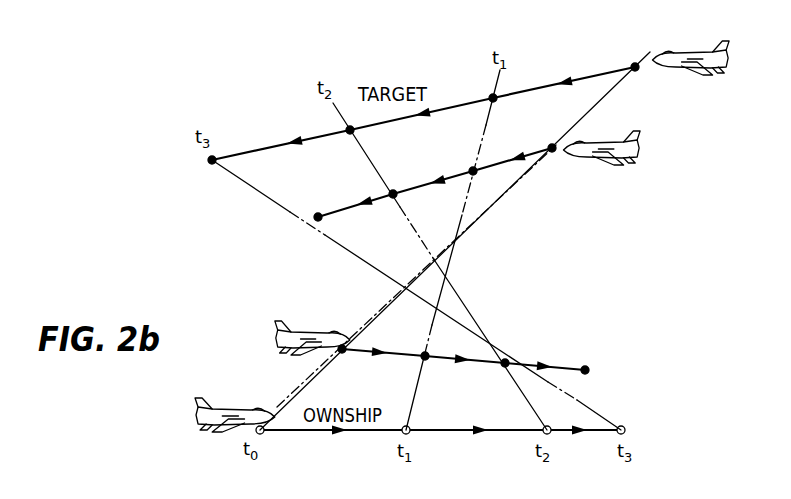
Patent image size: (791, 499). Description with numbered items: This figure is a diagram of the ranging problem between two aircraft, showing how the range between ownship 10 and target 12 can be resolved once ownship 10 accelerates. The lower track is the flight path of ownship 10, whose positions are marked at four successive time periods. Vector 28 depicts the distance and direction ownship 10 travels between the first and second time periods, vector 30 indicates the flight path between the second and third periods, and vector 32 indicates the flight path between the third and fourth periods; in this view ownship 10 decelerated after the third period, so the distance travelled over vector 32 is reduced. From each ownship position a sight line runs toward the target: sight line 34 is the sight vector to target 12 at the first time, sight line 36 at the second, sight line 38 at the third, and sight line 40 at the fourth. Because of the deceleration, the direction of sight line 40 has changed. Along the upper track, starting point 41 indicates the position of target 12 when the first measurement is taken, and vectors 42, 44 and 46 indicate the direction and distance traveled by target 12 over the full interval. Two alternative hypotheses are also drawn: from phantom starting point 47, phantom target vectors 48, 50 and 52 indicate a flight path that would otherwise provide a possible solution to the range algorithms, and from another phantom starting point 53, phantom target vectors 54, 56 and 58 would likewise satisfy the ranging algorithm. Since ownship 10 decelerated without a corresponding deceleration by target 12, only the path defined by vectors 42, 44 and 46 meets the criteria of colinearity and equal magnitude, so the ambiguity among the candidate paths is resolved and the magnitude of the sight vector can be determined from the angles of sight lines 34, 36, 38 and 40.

The ownship 10 is at (192, 397).
The target 12 is at (723, 76).
The vector 28 is at (380, 436).
The vector 30 is at (512, 428).
The vector 32 is at (595, 428).
The sight line 34 is at (375, 317).
The sight line 36 is at (432, 335).
The sight line 38 is at (478, 323).
The sight line 40 is at (515, 354).
The starting point 41 is at (647, 80).
The vector 42 is at (612, 70).
The vector 44 is at (466, 103).
The vector 46 is at (323, 130).
The phantom starting point 47 is at (550, 153).
The phantom target vector 48 is at (545, 145).
The phantom target vector 50 is at (462, 172).
The phantom target vector 52 is at (372, 200).
The phantom starting point 53 is at (322, 363).
The phantom target vector 54 is at (402, 358).
The phantom target vector 56 is at (487, 364).
The phantom target vector 58 is at (563, 366).